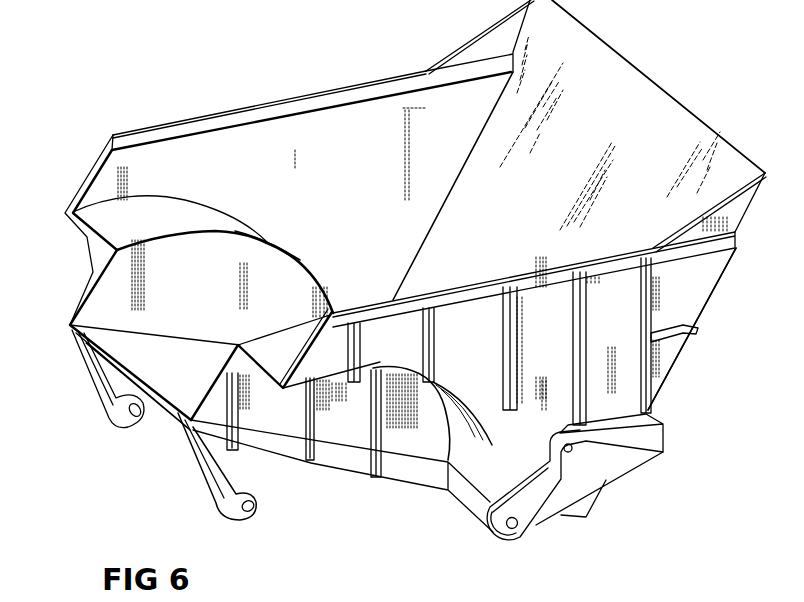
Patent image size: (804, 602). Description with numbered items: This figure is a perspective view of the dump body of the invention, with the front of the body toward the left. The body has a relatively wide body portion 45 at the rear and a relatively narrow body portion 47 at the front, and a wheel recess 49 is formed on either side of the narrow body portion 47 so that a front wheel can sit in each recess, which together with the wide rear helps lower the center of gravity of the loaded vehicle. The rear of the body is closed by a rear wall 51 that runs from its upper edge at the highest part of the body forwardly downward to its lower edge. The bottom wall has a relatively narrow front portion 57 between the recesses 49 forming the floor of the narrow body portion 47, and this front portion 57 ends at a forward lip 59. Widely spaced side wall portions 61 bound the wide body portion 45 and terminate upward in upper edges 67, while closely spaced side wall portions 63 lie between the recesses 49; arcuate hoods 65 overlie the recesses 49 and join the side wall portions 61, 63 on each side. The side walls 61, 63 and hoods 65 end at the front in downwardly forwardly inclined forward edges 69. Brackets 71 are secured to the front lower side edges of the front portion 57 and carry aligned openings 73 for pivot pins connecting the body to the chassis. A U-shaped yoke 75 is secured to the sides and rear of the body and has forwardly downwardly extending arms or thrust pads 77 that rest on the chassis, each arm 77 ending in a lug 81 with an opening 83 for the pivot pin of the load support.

The wide body portion 45 is at (624, 385).
The narrow body portion 47 is at (107, 340).
The wheel recess 49 is at (418, 438).
The rear wall 51 is at (666, 108).
The front portion of bottom wall 57 is at (178, 415).
The forward lip 59 is at (115, 370).
The side wall portion 61 is at (228, 143).
The side wall portion 63 is at (100, 307).
The arcuate hood 65 is at (228, 218).
The upper edge 67 is at (503, 281).
The forward edge 69 is at (88, 238).
The bracket 71 is at (296, 472).
The opening 73 is at (130, 422).
The U-shaped yoke 75 is at (644, 440).
The arm or thrust pad 77 is at (593, 472).
The lug 81 is at (508, 533).
The opening 83 is at (507, 527).